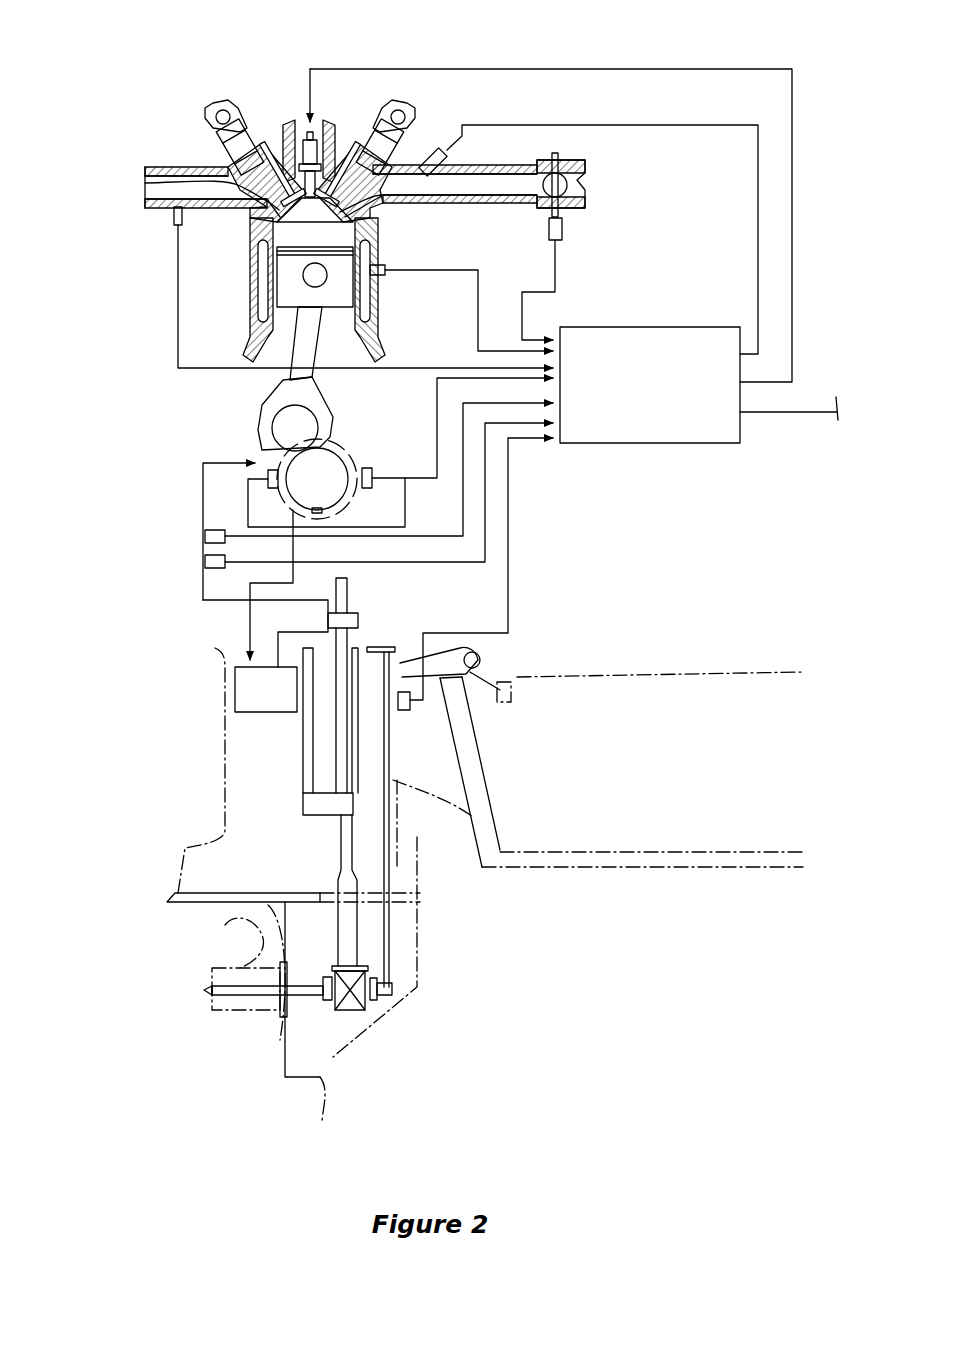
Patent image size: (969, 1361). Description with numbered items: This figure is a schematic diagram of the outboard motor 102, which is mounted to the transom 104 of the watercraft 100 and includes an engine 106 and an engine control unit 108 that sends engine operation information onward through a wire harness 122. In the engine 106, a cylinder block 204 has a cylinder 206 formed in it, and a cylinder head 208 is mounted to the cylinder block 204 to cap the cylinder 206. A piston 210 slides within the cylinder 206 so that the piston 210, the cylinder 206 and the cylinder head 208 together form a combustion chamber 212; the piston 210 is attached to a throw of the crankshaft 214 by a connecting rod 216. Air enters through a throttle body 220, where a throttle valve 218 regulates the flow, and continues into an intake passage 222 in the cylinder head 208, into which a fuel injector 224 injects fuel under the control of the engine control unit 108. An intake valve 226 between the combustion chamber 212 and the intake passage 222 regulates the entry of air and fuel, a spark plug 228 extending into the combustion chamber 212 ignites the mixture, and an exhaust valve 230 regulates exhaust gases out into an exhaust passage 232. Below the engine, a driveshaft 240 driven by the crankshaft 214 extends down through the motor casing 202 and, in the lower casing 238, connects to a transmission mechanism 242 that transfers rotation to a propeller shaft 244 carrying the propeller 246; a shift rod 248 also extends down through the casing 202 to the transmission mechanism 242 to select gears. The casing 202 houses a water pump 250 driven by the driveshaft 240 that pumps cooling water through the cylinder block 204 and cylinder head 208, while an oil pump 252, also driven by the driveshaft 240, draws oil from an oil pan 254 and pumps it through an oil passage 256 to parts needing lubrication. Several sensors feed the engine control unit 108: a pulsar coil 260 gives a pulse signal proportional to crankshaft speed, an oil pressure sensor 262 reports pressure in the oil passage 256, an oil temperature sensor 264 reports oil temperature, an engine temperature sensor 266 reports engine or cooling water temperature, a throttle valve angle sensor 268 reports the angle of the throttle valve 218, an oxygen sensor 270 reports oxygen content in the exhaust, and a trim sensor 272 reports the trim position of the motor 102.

The watercraft 100 is at (702, 868).
The outboard motor 102 is at (225, 743).
The transom 104 is at (485, 790).
The engine 106 is at (208, 150).
The engine control unit 108 is at (662, 343).
The wire harness 122 is at (803, 415).
The motor casing 202 is at (225, 812).
The cylinder block 204 is at (250, 305).
The cylinder 206 is at (250, 228).
The cylinder head 208 is at (278, 150).
The piston 210 is at (285, 272).
The combustion chamber 212 is at (360, 228).
The crankshaft 214 is at (340, 447).
The connecting rod 216 is at (302, 353).
The throttle valve 218 is at (558, 187).
The throttle body 220 is at (563, 152).
The intake passage 222 is at (517, 190).
The fuel injector 224 is at (446, 146).
The intake valve 226 is at (345, 152).
The spark plug 228 is at (323, 128).
The exhaust valve 230 is at (227, 172).
The exhaust passage 232 is at (163, 190).
The lower casing 238 is at (360, 1001).
The driveshaft 240 is at (342, 832).
The transmission mechanism 242 is at (360, 1010).
The propeller shaft 244 is at (267, 1013).
The propeller 246 is at (210, 1012).
The shift rod 248 is at (393, 867).
The water pump 250 is at (303, 800).
The oil pump 252 is at (350, 621).
The oil pan 254 is at (243, 695).
The oil passage 256 is at (203, 520).
The pulsar coil 260 is at (268, 476).
The oil pressure sensor 262 is at (205, 562).
The oil temperature sensor 264 is at (205, 536).
The engine temperature sensor 266 is at (386, 276).
The throttle valve angle sensor 268 is at (560, 230).
The oxygen sensor 270 is at (172, 215).
The trim sensor 272 is at (410, 707).